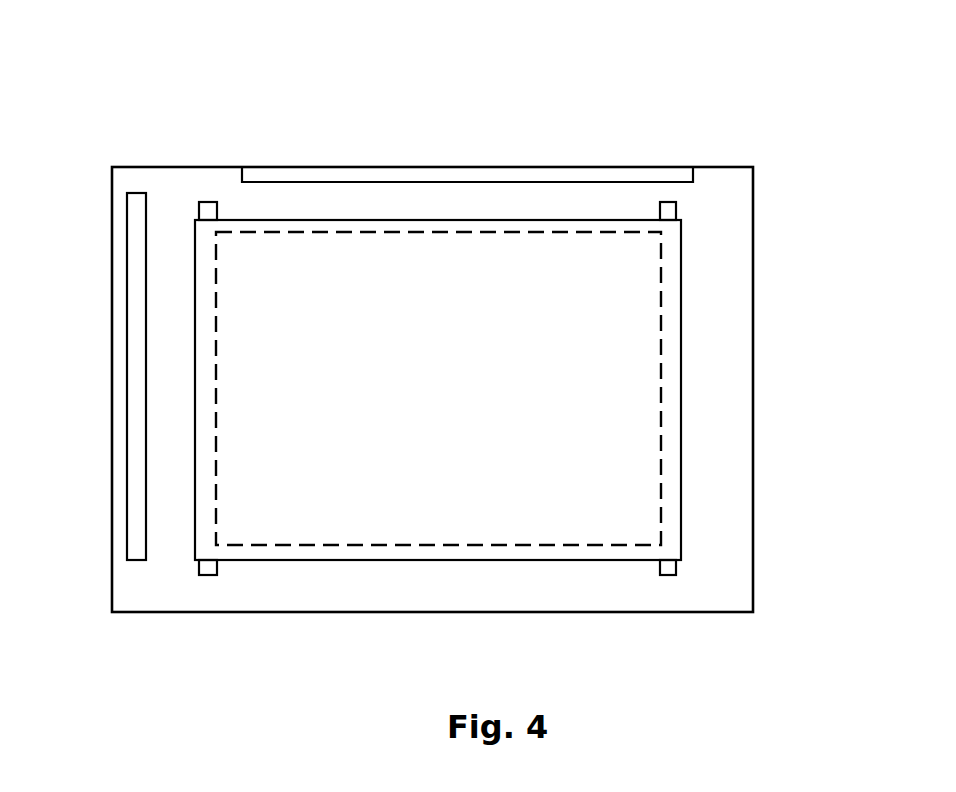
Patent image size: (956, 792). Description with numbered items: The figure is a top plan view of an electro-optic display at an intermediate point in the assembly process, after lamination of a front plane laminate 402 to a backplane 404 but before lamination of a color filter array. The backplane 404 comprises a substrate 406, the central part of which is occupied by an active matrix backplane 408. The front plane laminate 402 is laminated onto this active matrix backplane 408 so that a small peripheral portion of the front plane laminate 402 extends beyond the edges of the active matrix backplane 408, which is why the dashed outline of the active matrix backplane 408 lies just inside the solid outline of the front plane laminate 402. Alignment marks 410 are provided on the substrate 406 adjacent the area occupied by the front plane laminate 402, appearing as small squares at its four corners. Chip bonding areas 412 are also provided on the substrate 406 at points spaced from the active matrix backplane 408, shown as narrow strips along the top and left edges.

The front plane laminate 402 is at (681, 250).
The backplane 404 is at (750, 140).
The substrate 406 is at (734, 428).
The active matrix backplane 408 is at (662, 323).
The alignment marks 410 is at (676, 575).
The chip bonding areas 412 is at (265, 173).